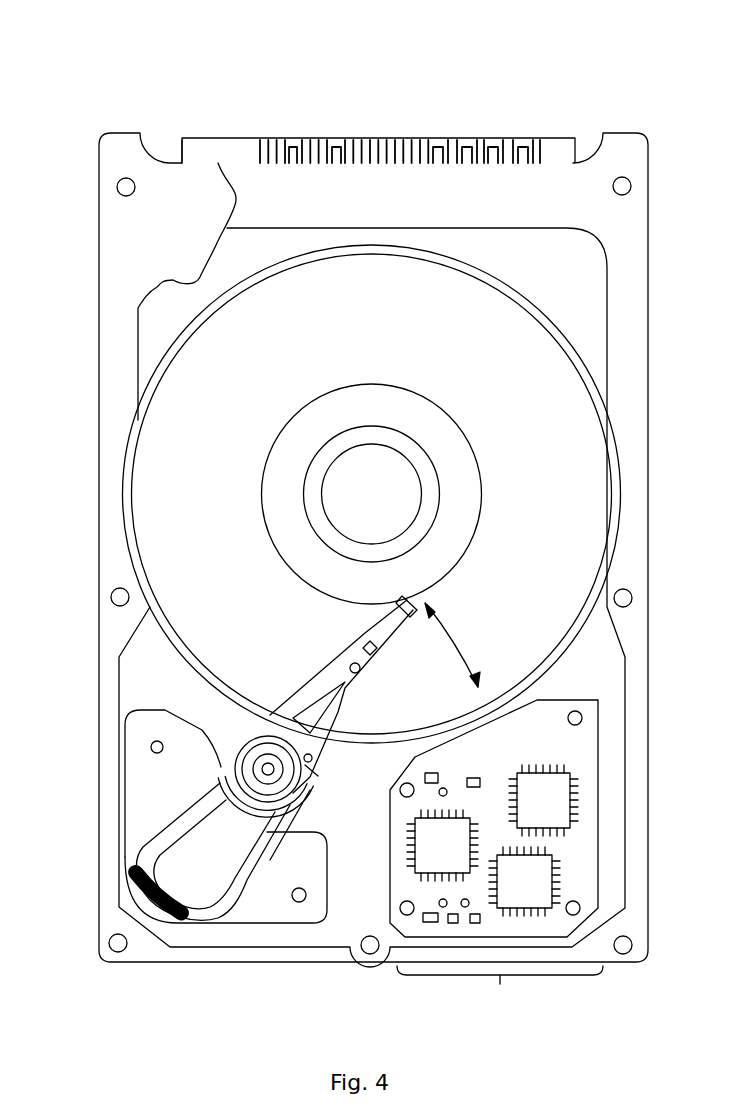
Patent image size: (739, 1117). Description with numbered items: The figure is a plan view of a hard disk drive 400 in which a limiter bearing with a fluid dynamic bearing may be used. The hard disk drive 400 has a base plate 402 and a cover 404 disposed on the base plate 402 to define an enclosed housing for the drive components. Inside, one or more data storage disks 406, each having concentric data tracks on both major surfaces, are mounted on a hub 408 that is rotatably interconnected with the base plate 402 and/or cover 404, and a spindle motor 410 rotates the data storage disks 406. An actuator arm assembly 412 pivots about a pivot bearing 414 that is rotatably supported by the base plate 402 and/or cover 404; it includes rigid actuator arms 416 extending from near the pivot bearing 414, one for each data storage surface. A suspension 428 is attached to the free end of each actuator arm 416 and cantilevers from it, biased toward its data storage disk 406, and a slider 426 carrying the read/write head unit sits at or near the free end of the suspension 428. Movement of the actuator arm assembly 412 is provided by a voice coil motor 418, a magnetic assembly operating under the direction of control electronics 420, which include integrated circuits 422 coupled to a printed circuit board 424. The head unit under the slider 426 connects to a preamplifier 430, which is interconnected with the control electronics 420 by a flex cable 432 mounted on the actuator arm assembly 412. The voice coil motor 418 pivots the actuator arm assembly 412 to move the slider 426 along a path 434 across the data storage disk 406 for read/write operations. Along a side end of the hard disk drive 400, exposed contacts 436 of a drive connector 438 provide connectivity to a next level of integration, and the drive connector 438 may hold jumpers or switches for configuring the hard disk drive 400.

The hard disk drive 400 is at (134, 59).
The base plate 402 is at (113, 545).
The cover 404 is at (160, 238).
The data storage disk 406 is at (238, 390).
The hub 408 is at (272, 450).
The spindle motor 410 is at (348, 507).
The actuator arm assembly 412 is at (340, 752).
The pivot bearing 414 is at (248, 772).
The actuator arm 416 is at (215, 762).
The voice coil motor 418 is at (112, 851).
The control electronics 420 is at (500, 996).
The integrated circuits 422 is at (547, 798).
The printed circuit board 424 is at (572, 853).
The slider 426 is at (415, 597).
The suspension 428 is at (367, 632).
The preamplifier 430 is at (310, 790).
The flex cable 432 is at (313, 772).
The path 434 is at (462, 645).
The exposed contacts 436 is at (539, 142).
The drive connector 438 is at (188, 146).